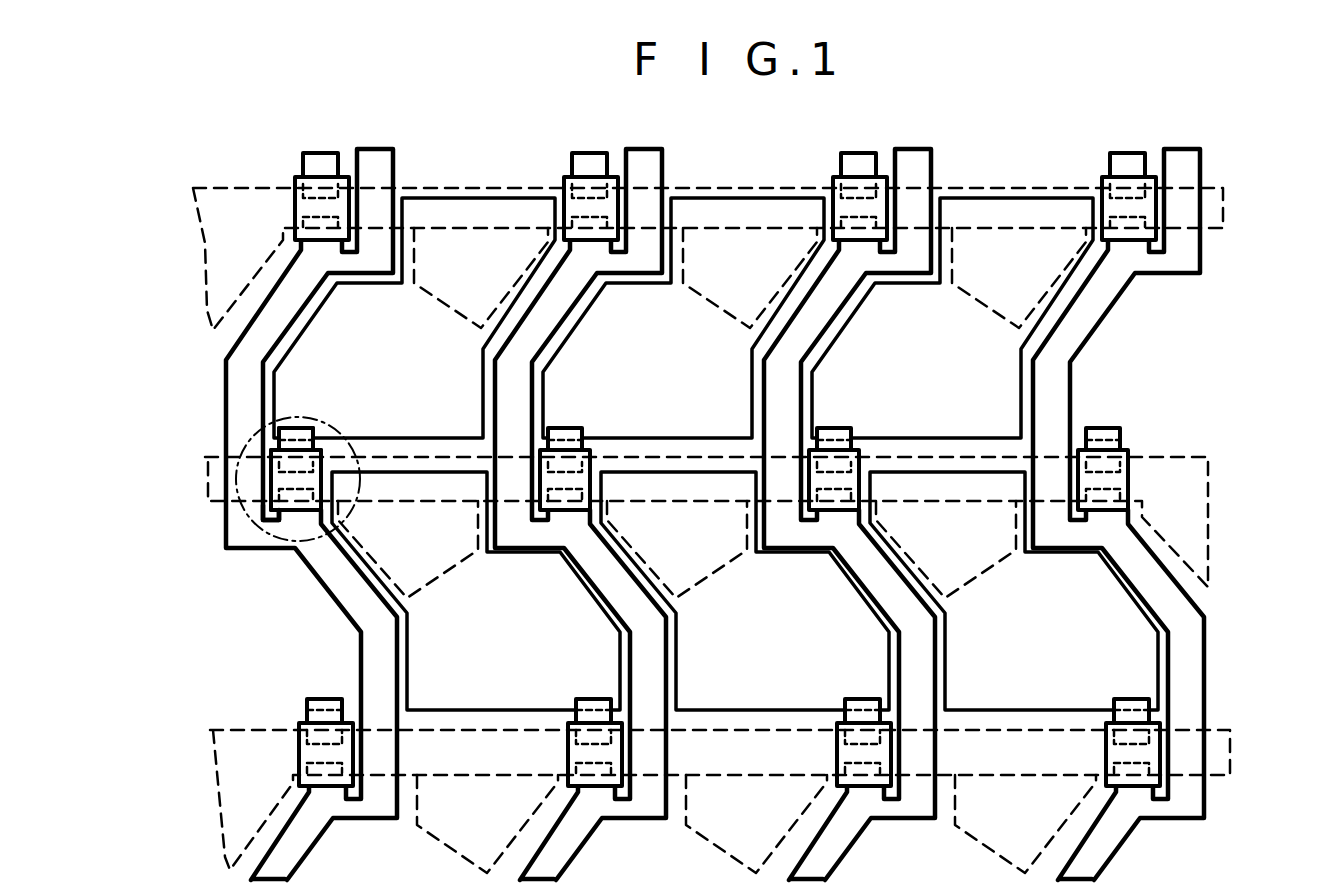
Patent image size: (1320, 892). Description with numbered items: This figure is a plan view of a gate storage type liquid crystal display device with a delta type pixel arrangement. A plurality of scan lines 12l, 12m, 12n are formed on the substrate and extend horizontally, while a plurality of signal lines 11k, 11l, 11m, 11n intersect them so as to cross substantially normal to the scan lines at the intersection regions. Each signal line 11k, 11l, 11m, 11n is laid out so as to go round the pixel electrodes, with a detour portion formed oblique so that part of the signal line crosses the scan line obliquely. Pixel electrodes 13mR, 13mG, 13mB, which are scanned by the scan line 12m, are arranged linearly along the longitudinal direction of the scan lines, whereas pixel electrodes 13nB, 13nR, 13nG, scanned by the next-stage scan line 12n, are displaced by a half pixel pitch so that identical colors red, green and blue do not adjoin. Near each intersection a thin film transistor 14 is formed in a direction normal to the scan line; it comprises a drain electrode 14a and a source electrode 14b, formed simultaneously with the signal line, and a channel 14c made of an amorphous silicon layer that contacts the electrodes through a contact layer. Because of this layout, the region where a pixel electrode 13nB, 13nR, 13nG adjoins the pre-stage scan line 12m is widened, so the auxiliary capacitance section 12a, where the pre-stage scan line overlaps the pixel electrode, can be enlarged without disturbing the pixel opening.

The signal line 11k is at (372, 162).
The signal line 11l is at (648, 165).
The signal line 11m is at (912, 162).
The signal line 11n is at (1182, 160).
The scan line 12l is at (1228, 199).
The scan line 12m is at (1213, 499).
The scan line 12n is at (1232, 743).
The auxiliary capacitance section 12a is at (467, 227).
The pixel electrode 13mR is at (414, 393).
The pixel electrode 13mG is at (684, 393).
The pixel electrode 13mB is at (955, 393).
The pixel electrode 13nB is at (557, 658).
The pixel electrode 13nR is at (822, 658).
The pixel electrode 13nG is at (1084, 658).
The thin film transistor 14 is at (302, 418).
The drain electrode 14a is at (258, 509).
The source electrode 14b is at (270, 440).
The channel 14c is at (272, 478).